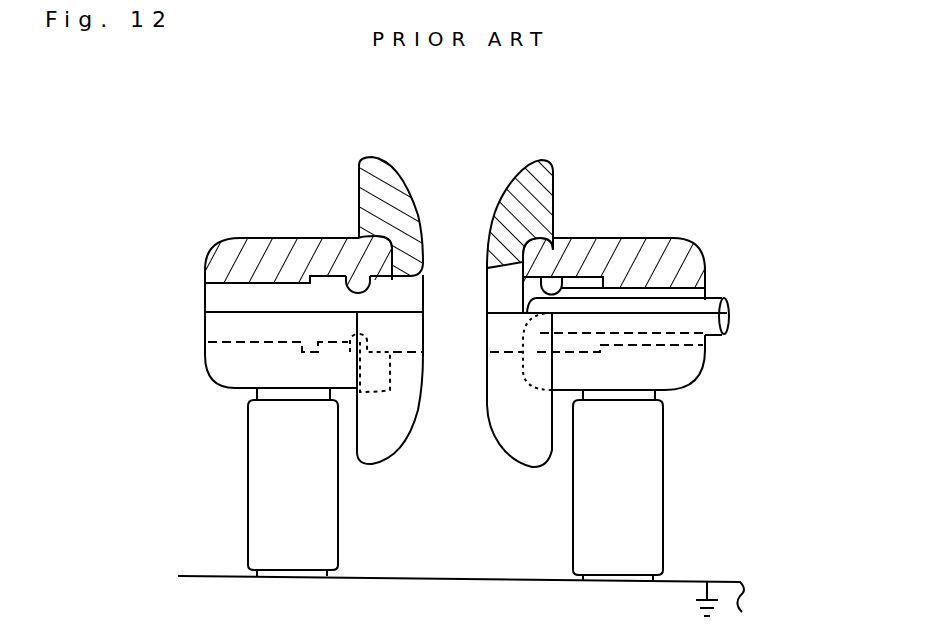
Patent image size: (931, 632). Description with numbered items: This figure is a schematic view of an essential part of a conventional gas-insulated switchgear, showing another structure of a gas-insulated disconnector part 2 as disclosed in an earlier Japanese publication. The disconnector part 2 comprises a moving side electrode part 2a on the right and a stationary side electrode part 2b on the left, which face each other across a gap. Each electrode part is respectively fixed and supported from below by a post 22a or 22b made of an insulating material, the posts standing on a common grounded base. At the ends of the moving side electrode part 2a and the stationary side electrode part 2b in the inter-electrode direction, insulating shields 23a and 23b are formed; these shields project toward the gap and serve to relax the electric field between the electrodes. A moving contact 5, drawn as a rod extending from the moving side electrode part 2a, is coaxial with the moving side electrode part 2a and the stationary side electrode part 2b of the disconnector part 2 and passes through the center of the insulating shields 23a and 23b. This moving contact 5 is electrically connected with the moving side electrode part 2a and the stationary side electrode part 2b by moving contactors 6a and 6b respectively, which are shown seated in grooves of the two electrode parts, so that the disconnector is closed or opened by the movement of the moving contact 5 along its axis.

The disconnector part 2 is at (456, 162).
The moving side electrode part 2a is at (634, 238).
The stationary side electrode part 2b is at (248, 238).
The moving contactor 6a is at (575, 283).
The moving contactor 6b is at (335, 277).
The insulating shield 23a is at (548, 166).
The insulating shield 23b is at (369, 157).
The post 22a is at (663, 448).
The post 22b is at (248, 456).
The moving contact 5 is at (717, 338).